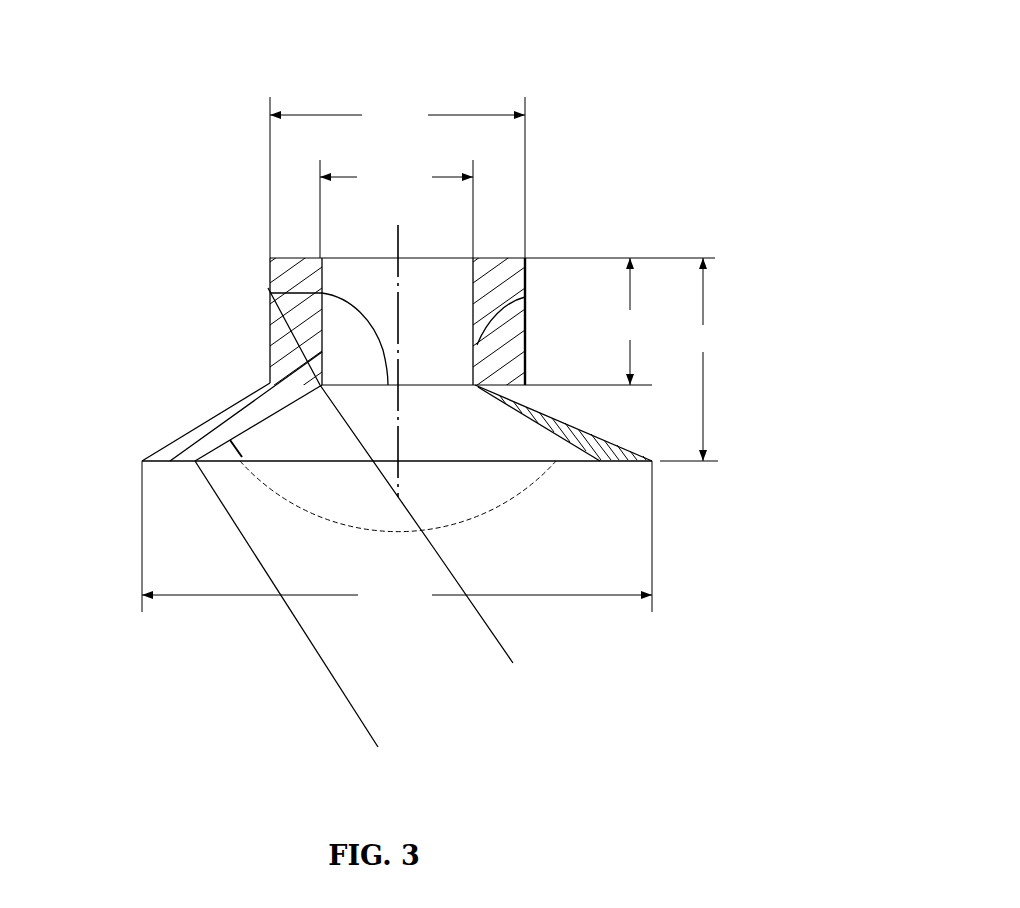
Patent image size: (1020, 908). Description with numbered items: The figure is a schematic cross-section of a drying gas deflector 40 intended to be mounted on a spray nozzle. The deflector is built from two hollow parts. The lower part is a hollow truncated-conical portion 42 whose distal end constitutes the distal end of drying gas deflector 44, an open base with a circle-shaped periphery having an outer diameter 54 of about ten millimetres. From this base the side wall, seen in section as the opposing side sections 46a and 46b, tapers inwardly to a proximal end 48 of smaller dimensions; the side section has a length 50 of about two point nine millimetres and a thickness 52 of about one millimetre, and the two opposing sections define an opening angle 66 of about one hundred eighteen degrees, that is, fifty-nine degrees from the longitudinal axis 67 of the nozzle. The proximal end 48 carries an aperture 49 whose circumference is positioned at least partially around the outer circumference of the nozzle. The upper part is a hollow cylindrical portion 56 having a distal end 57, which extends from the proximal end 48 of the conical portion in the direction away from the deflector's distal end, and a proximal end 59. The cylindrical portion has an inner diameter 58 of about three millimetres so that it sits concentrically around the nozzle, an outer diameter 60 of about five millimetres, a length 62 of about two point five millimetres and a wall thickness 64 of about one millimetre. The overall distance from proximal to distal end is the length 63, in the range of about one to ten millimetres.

The drying gas deflector 40 is at (660, 205).
The truncated-conical portion 42 is at (605, 423).
The distal end of drying gas deflector 44 is at (600, 462).
The opposing side section 46a is at (153, 456).
The opposing side section 46b is at (626, 460).
The proximal end 48 is at (270, 292).
The aperture 49 is at (268, 288).
The length of side section 50 is at (500, 645).
The thickness of side section 52 is at (273, 447).
The outer diameter of distal end 54 is at (397, 536).
The hollow cylindrical portion 56 is at (537, 300).
The distal end of hollow cylindrical portion 57 is at (525, 297).
The inner diameter of hollow cylindrical portion 58 is at (396, 209).
The proximal end of hollow cylindrical portion 59 is at (319, 257).
The outer diameter of hollow cylindrical portion 60 is at (397, 177).
The length of hollow cylindrical portion 62 is at (627, 321).
The length of drying gas deflector 63 is at (705, 359).
The wall thickness of hollow cylindrical portion 64 is at (342, 318).
The opening angle 66 is at (398, 503).
The longitudinal axis 67 is at (395, 348).